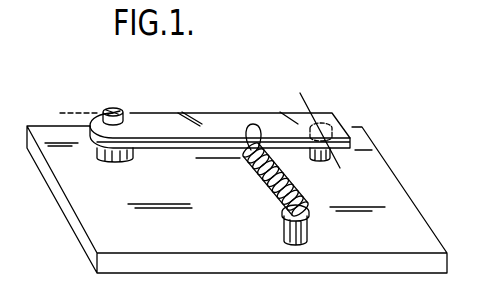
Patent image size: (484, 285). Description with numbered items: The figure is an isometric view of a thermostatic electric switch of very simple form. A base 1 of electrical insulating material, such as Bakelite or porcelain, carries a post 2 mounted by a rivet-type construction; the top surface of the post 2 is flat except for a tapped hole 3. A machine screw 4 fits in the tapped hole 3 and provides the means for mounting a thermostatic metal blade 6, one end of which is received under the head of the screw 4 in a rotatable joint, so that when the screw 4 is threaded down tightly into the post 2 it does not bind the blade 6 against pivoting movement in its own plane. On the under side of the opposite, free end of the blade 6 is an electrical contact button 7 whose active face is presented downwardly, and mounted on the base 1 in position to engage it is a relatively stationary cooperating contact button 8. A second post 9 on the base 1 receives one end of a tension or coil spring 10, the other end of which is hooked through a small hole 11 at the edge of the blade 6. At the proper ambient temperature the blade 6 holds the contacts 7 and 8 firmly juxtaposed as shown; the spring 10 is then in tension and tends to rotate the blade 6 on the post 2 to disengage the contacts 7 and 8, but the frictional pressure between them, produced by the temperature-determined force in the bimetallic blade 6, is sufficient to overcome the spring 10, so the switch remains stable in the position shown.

The base 1 is at (100, 238).
The post 2 is at (72, 125).
The tapped hole 3 is at (312, 95).
The machine screw 4 is at (110, 108).
The thermostatic metal blade 6 is at (208, 117).
The electrical contact button 7 is at (322, 125).
The cooperating contact button 8 is at (319, 160).
The post 9 is at (309, 228).
The coil spring 10 is at (268, 196).
The small hole 11 is at (250, 128).